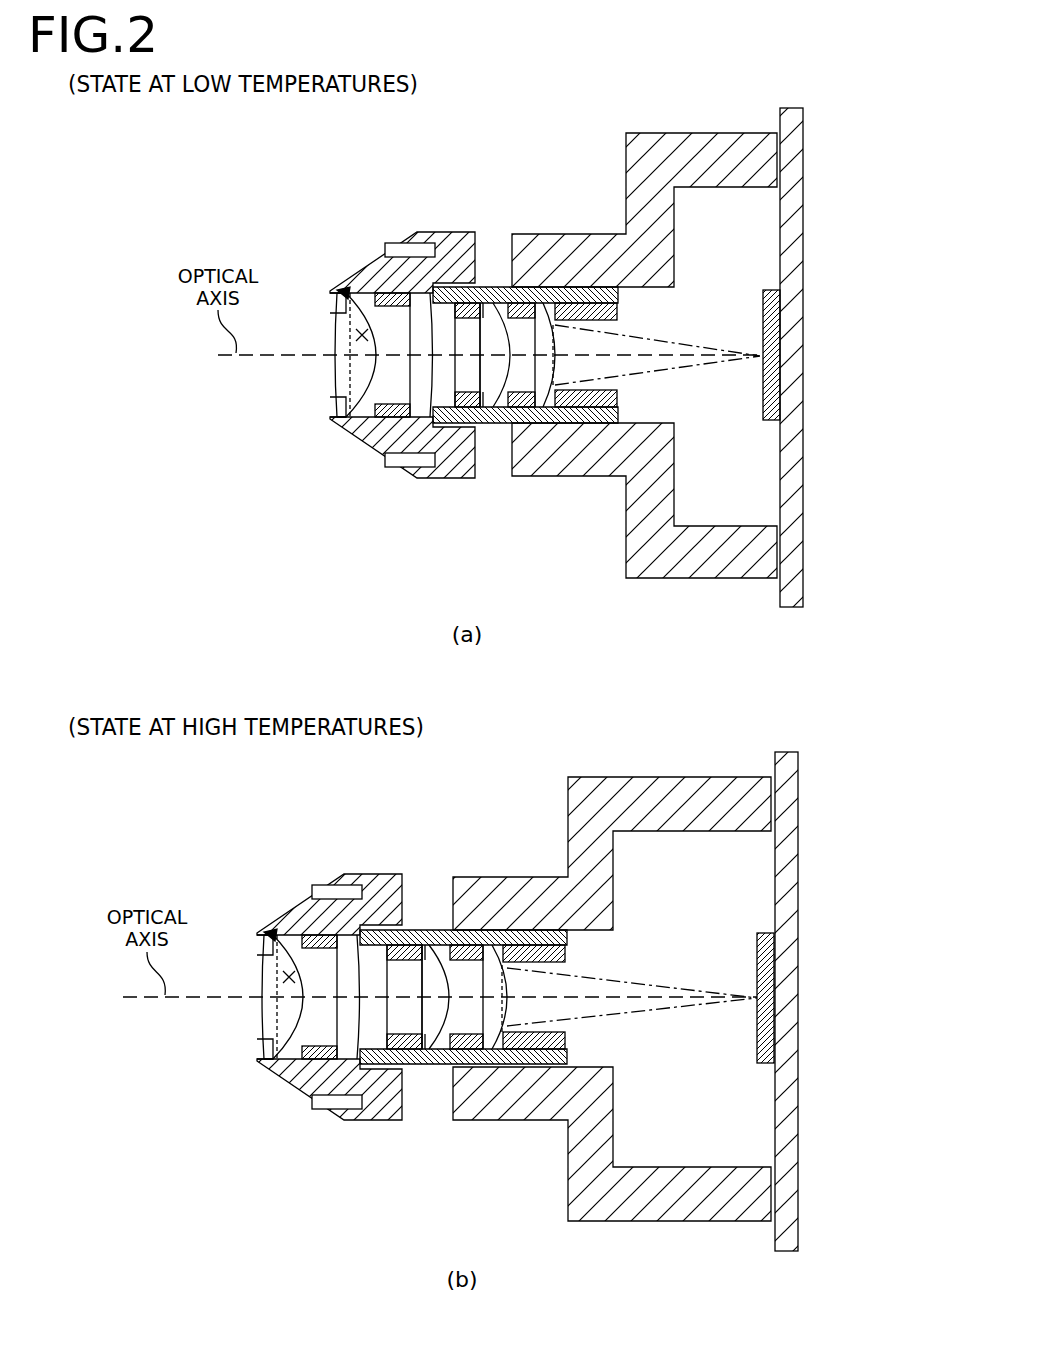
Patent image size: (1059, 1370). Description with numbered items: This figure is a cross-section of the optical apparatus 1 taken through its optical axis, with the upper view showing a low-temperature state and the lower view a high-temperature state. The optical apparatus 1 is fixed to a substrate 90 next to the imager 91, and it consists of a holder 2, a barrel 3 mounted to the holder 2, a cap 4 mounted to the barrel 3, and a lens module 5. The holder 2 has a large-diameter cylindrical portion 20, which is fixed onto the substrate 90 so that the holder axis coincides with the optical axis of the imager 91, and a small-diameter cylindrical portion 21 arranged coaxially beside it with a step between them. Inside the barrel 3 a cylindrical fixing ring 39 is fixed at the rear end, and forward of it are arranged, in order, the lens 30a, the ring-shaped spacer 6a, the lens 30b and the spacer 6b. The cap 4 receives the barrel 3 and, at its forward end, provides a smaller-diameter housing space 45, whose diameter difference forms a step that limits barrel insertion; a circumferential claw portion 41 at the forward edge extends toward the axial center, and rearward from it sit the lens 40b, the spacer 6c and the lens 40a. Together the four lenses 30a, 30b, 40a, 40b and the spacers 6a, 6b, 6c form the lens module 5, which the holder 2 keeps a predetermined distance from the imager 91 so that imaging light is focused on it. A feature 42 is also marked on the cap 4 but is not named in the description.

The optical apparatus 1 is at (708, 96).
The holder 2 is at (565, 78).
The barrel 3 is at (530, 283).
The cap 4 is at (447, 232).
The lens module 5 is at (345, 293).
The spacer 6a is at (497, 410).
The spacer 6b is at (447, 417).
The spacer 6c is at (362, 408).
The large-diameter cylindrical portion 20 is at (645, 133).
The small-diameter cylindrical portion 21 is at (556, 232).
The lens 30a is at (550, 385).
The lens 30b is at (497, 318).
The fixing ring 39 is at (618, 300).
The lens 40a is at (413, 400).
The lens 40b is at (337, 370).
The claw portion 41 is at (335, 301).
The groove 42 is at (405, 250).
The housing space 45 is at (362, 335).
The substrate 90 is at (803, 524).
The imager 91 is at (775, 322).